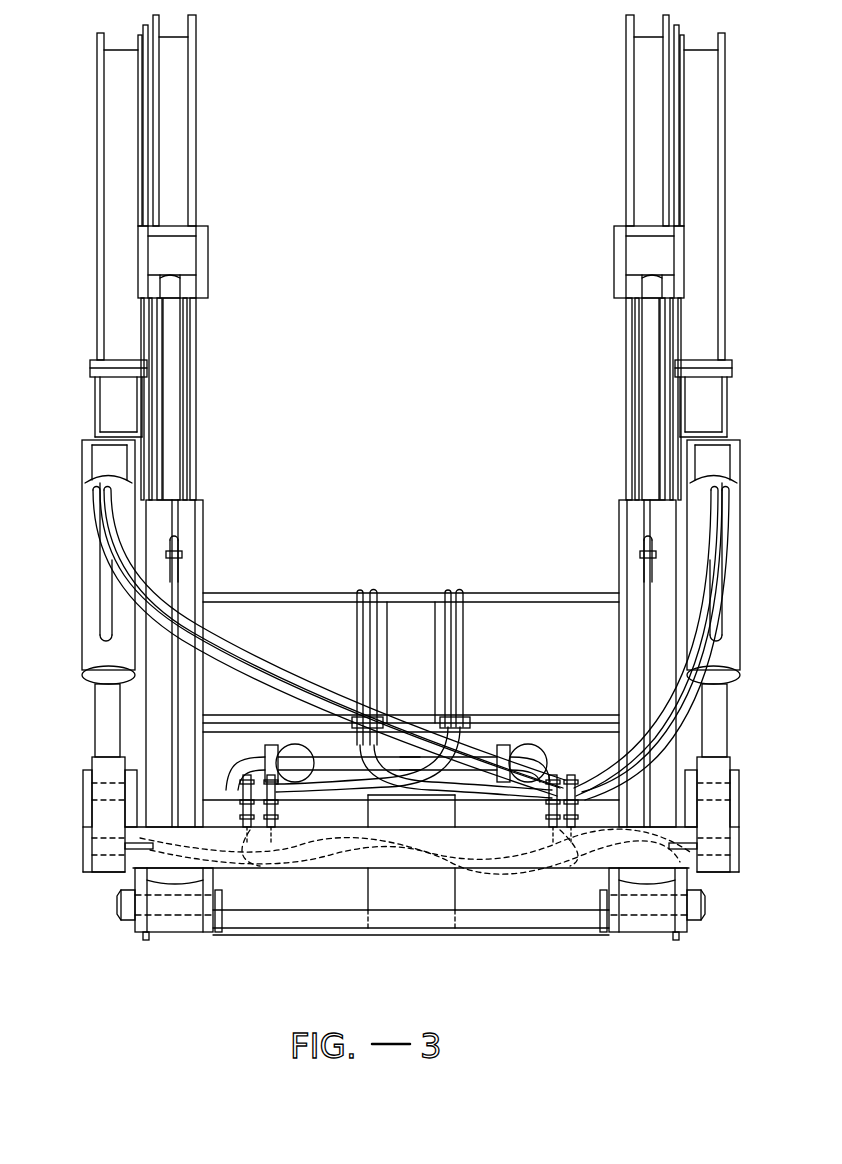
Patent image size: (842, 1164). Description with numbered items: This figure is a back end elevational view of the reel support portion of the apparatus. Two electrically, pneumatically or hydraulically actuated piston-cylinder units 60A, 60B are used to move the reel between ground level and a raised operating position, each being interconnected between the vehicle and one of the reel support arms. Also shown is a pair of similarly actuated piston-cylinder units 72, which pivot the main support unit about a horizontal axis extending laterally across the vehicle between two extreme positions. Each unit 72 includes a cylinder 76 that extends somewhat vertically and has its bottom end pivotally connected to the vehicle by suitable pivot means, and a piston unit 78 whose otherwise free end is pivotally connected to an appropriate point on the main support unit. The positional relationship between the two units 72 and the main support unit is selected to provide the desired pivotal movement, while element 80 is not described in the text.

The piston-cylinder unit 60A is at (728, 626).
The piston-cylinder unit 60B is at (90, 596).
The piston-cylinder unit 72 is at (212, 534).
The cylinder 76 is at (202, 617).
The piston unit 78 is at (650, 402).
The cross head 80 is at (190, 262).